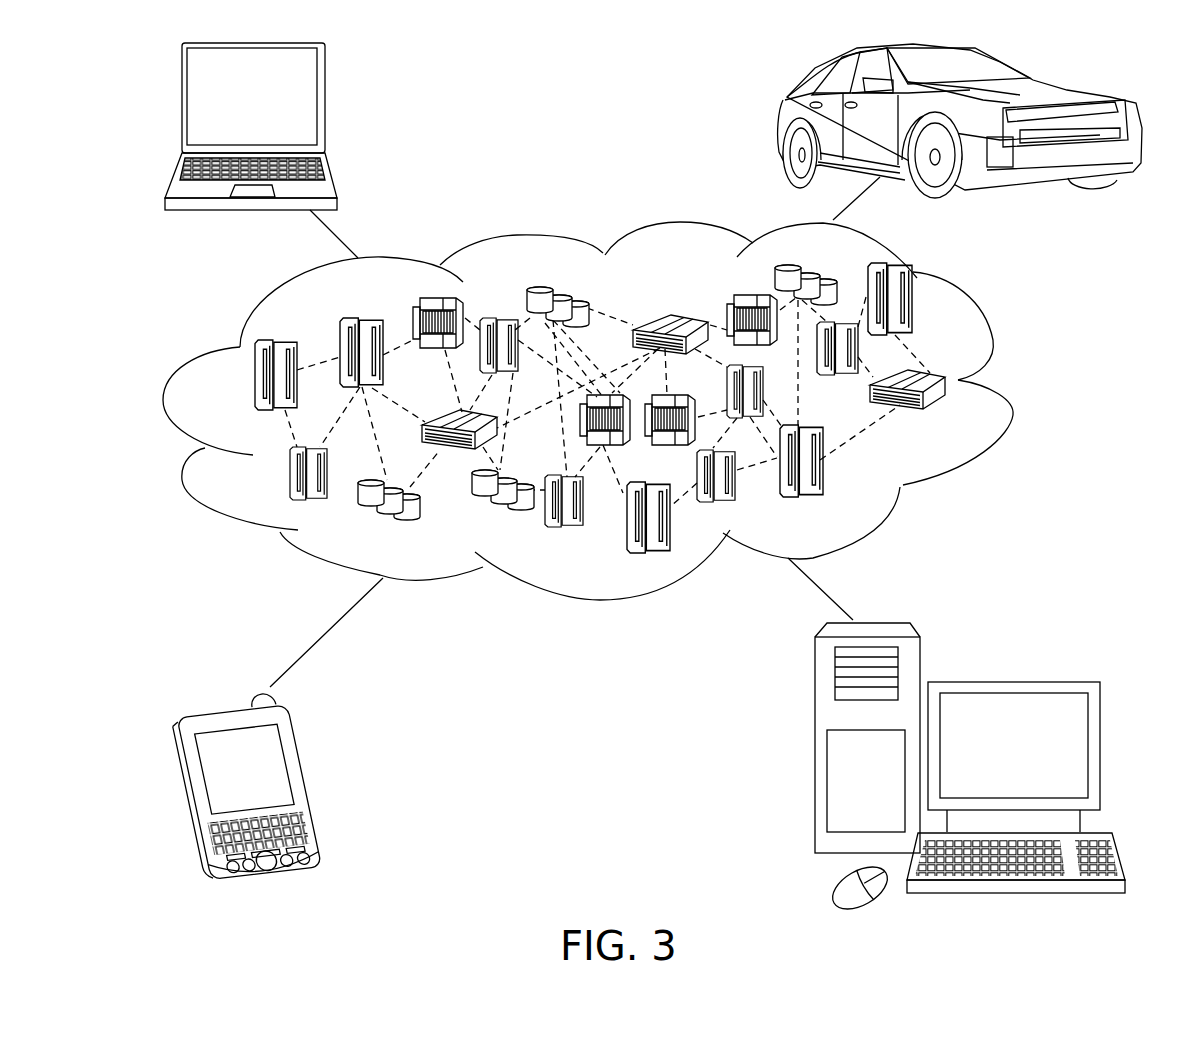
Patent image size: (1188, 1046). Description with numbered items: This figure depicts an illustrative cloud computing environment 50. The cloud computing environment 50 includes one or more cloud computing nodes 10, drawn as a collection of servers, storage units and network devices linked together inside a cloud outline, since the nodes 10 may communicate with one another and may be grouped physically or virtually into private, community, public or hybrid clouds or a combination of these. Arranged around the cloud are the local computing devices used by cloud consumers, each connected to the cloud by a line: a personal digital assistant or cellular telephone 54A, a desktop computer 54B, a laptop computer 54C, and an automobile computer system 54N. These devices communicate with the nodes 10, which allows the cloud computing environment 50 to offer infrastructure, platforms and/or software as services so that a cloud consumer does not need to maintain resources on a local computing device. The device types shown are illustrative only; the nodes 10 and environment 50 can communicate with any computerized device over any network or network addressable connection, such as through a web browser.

The cloud computing node 10 is at (952, 417).
The cloud computing environment 50 is at (1013, 388).
The personal digital assistant (PDA) or cellular telephone 54A is at (315, 778).
The desktop computer 54B is at (1012, 680).
The laptop computer 54C is at (325, 108).
The automobile computer system 54N is at (783, 125).